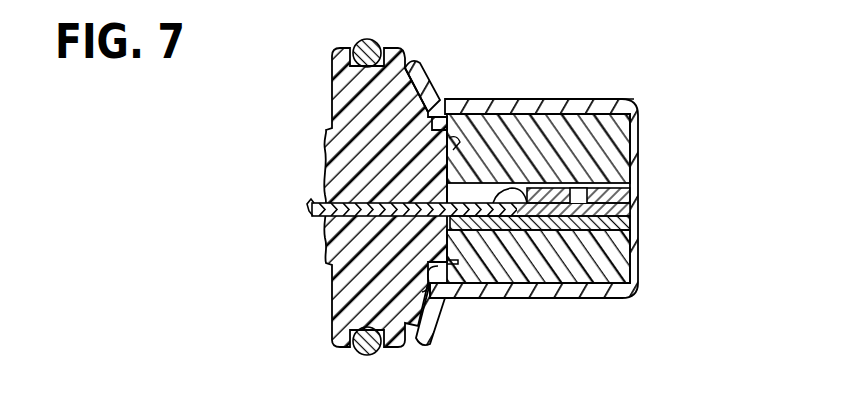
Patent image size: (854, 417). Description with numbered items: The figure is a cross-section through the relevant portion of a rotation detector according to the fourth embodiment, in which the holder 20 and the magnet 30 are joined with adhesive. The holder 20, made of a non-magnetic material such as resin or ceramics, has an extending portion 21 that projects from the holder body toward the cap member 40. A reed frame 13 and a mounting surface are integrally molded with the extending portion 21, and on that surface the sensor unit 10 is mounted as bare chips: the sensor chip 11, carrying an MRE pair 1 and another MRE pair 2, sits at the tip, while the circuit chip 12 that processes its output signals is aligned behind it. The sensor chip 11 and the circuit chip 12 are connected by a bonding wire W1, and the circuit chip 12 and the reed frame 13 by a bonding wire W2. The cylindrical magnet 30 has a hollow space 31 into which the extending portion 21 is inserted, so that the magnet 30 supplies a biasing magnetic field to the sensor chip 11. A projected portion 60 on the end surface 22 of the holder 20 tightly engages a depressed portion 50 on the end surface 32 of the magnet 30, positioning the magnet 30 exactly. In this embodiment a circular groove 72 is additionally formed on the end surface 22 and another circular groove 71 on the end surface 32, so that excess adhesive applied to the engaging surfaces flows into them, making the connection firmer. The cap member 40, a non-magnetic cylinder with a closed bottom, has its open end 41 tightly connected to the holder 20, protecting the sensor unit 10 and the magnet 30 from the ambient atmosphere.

The MRE pair 1 is at (581, 149).
The MRE pair 2 is at (581, 149).
The sensor unit 10 is at (600, 149).
The sensor chip 11 is at (626, 206).
The circuit chip 12 is at (626, 225).
The reed frame 13 is at (505, 283).
The holder 20 is at (345, 312).
The extending portion 21 is at (568, 283).
The end surface 22 is at (447, 117).
The magnet 30 is at (612, 262).
The hollow space 31 is at (476, 186).
The end surface 32 is at (432, 298).
The cap member 40 is at (509, 180).
The open end 41 is at (433, 98).
The depressed portion 50 is at (462, 298).
The projected portion 60 is at (440, 147).
The circular groove 71 is at (453, 140).
The circular groove 72 is at (417, 114).
The bonding wire W1 is at (621, 99).
The bonding wire W2 is at (577, 187).